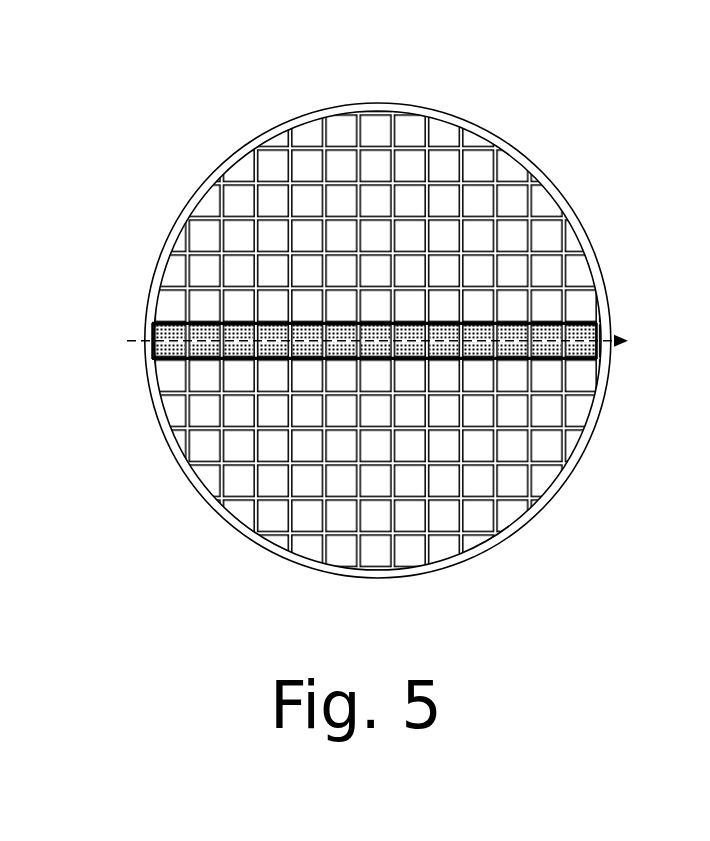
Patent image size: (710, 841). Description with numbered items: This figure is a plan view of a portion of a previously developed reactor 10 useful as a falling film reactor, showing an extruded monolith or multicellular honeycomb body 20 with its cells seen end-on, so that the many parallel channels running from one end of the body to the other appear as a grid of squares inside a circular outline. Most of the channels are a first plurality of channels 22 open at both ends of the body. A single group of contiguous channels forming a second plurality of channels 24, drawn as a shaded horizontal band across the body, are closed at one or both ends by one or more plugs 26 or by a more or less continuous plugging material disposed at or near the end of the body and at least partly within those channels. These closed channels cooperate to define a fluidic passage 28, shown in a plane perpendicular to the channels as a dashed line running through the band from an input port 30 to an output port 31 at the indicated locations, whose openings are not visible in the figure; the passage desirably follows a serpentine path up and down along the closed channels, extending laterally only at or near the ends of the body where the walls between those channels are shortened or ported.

The reactor 10 is at (381, 353).
The multicellular body 20 is at (272, 556).
The first plurality of channels 22 is at (378, 513).
The second plurality of channels 24 is at (434, 316).
The plugs 26 is at (178, 352).
The fluidic passage 28 is at (511, 342).
The input port 30 is at (104, 341).
The output port 31 is at (655, 341).